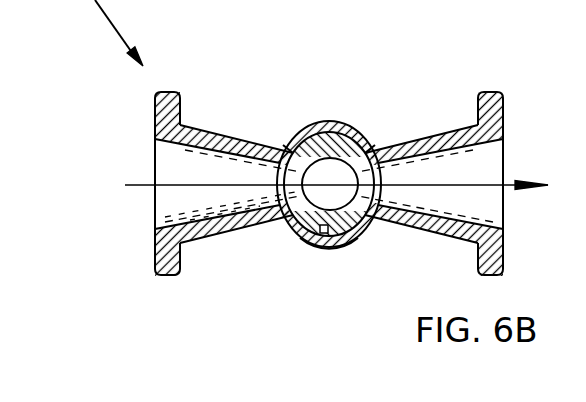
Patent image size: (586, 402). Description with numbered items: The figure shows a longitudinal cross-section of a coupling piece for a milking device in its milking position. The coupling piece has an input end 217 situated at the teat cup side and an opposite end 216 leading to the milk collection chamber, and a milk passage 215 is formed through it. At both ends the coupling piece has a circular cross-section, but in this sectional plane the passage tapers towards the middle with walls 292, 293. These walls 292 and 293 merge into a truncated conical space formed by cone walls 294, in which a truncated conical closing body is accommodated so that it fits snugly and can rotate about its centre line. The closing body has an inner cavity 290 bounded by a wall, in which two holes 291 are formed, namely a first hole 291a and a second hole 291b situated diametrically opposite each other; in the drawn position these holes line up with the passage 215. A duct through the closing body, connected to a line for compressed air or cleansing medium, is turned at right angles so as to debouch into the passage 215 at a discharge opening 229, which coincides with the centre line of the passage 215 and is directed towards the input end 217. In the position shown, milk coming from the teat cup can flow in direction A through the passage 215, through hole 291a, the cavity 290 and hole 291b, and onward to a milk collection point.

The milk passage 215 is at (491, 181).
The end leading to the milk collection chamber 216 is at (503, 262).
The input end 217 is at (158, 262).
The discharge opening 229 is at (323, 238).
The inner cavity 290 is at (328, 170).
The hub 291 is at (356, 138).
The hole 291a is at (290, 150).
The hole 291b is at (373, 172).
The wall 292 is at (255, 215).
The wall 293 is at (437, 233).
The cone walls 294 is at (352, 240).
The direction of milk flow A is at (233, 195).